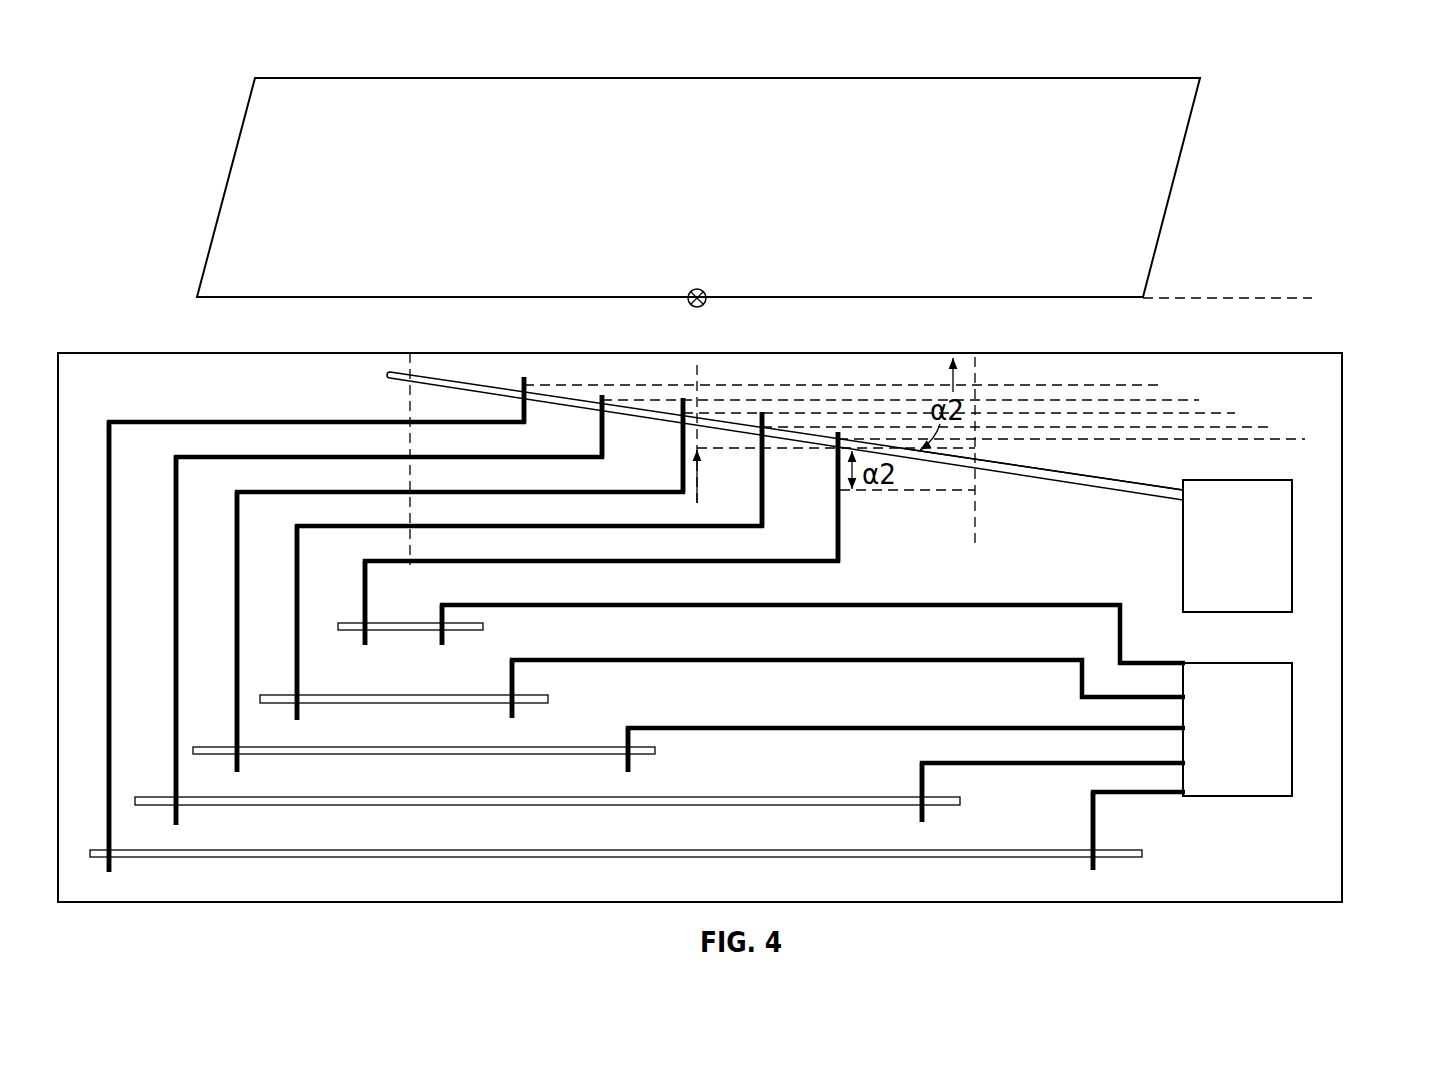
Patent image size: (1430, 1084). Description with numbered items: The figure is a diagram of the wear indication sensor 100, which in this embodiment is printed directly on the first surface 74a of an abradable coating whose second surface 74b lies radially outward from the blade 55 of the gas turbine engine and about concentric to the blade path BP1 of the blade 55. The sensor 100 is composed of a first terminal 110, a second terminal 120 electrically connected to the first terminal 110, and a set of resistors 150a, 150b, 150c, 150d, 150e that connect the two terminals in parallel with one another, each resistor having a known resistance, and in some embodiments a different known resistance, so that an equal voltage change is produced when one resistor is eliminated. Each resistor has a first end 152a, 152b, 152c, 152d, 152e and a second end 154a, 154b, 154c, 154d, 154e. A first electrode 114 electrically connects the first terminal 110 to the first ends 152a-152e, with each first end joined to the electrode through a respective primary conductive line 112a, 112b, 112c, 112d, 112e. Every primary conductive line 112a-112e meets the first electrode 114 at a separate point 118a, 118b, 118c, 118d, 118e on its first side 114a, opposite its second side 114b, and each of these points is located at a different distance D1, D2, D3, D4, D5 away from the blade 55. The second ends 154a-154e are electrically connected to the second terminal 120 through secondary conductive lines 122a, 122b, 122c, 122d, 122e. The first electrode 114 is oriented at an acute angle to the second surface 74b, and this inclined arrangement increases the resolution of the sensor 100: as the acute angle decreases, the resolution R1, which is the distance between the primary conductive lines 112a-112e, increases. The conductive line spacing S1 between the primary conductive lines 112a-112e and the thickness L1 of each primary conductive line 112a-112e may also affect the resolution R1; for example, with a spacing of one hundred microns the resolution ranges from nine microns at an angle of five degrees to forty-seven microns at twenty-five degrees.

The wear indication sensor 100 is at (1352, 82).
The blade 55 is at (711, 199).
The first surface 74a is at (104, 384).
The second surface 74b is at (1051, 355).
The first terminal 110 is at (1278, 547).
The second terminal 120 is at (1278, 730).
The first electrode 114 is at (1105, 483).
The first side 114a is at (1063, 491).
The second side 114b is at (1032, 379).
The primary conductive line 112a is at (452, 565).
The primary conductive line 112b is at (402, 530).
The primary conductive line 112c is at (497, 495).
The primary conductive line 112d is at (600, 462).
The primary conductive line 112e is at (518, 428).
The separate point 118a is at (838, 430).
The separate point 118b is at (765, 430).
The separate point 118c is at (697, 431).
The separate point 118d is at (608, 410).
The separate point 118e is at (530, 398).
The secondary conductive line 122a is at (688, 607).
The secondary conductive line 122b is at (758, 663).
The secondary conductive line 122c is at (798, 730).
The secondary conductive line 122d is at (1057, 765).
The secondary conductive line 122e is at (1180, 797).
The resistor 150a is at (372, 636).
The resistor 150b is at (423, 705).
The resistor 150c is at (428, 758).
The resistor 150d is at (432, 808).
The resistor 150e is at (432, 860).
The first end 152a is at (358, 648).
The first end 152b is at (300, 708).
The first end 152c is at (238, 760).
The first end 152d is at (178, 812).
The first end 152e is at (112, 860).
The second end 154a is at (447, 625).
The second end 154b is at (516, 708).
The second end 154c is at (625, 758).
The second end 154d is at (920, 810).
The second end 154e is at (1093, 850).
The blade path BP1 is at (700, 307).
The resolution R1 is at (713, 356).
The conductive line spacing S1 is at (761, 542).
The thickness L1 is at (790, 542).
The distance D1 is at (1305, 300).
The distance D2 is at (1270, 300).
The distance D3 is at (1235, 300).
The distance D4 is at (1199, 300).
The distance D5 is at (1164, 300).